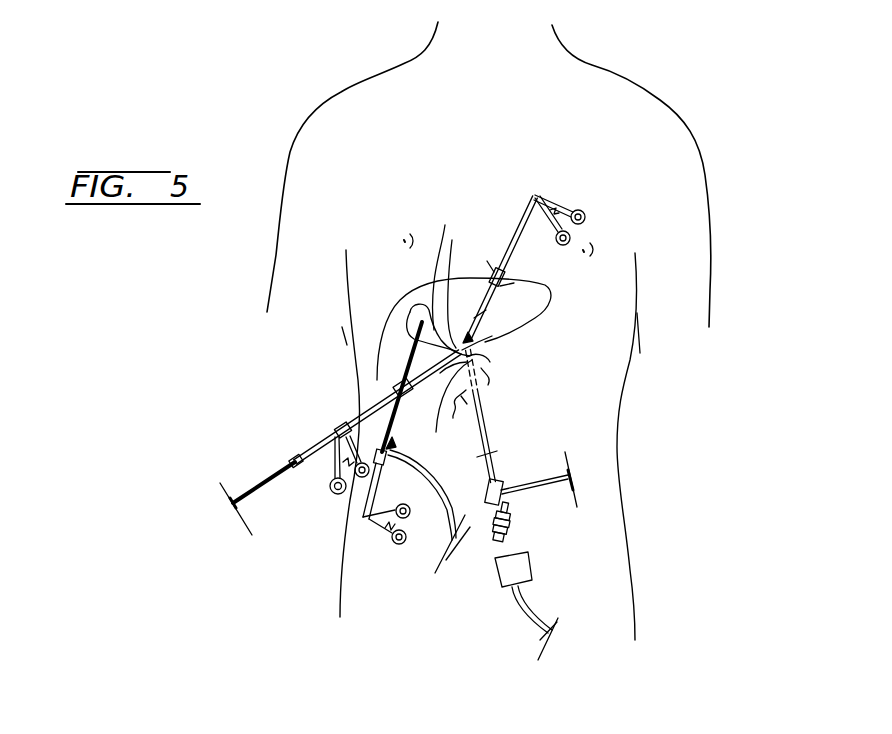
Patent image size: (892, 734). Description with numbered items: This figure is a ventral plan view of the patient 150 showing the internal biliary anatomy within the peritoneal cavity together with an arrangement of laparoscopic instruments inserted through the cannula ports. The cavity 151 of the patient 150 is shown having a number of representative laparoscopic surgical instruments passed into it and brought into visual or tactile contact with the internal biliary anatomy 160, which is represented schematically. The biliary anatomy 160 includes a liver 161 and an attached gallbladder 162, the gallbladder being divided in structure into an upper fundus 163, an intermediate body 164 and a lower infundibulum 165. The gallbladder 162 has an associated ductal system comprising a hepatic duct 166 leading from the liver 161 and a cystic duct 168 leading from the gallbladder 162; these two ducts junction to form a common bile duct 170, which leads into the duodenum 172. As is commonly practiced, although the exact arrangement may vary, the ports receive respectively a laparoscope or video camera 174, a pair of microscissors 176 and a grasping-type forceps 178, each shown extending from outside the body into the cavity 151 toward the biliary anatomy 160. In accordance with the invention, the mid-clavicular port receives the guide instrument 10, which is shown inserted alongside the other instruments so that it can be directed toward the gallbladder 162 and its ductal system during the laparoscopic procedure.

The guide instrument 10 is at (345, 428).
The patient 150 is at (663, 57).
The cavity 151 is at (603, 422).
The biliary anatomy 160 is at (372, 308).
The liver 161 is at (392, 337).
The gallbladder 162 is at (445, 225).
The fundus 163 is at (419, 316).
The body 164 is at (431, 315).
The infundibulum 165 is at (452, 240).
The hepatic duct 166 is at (493, 335).
The cystic duct 168 is at (477, 361).
The common bile duct 170 is at (483, 365).
The duodenum 172 is at (495, 392).
The laparoscope 174 is at (522, 568).
The microscissors 176 is at (560, 203).
The grasping-type forceps 178 is at (380, 533).